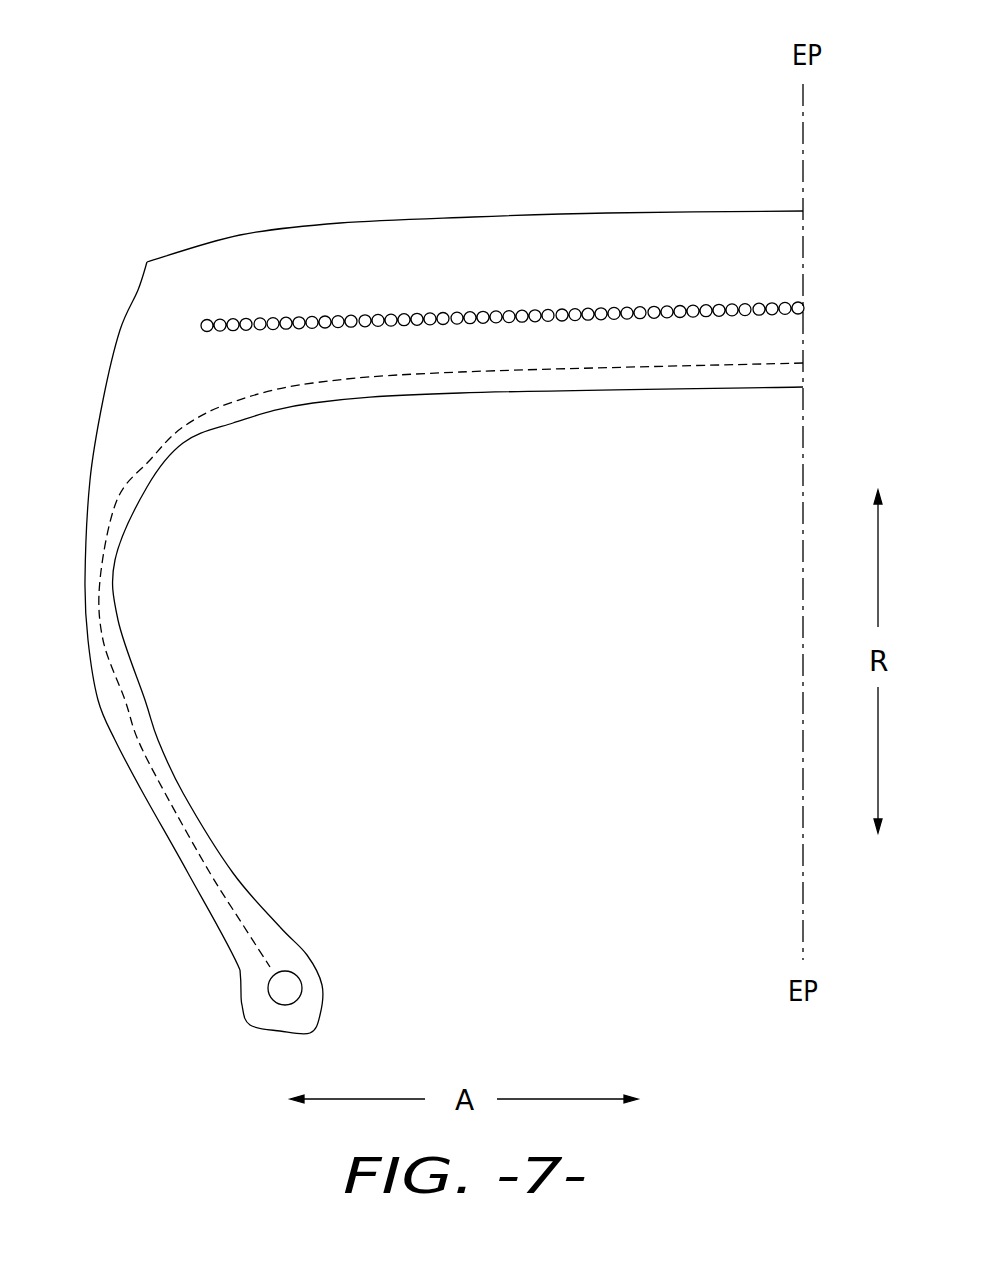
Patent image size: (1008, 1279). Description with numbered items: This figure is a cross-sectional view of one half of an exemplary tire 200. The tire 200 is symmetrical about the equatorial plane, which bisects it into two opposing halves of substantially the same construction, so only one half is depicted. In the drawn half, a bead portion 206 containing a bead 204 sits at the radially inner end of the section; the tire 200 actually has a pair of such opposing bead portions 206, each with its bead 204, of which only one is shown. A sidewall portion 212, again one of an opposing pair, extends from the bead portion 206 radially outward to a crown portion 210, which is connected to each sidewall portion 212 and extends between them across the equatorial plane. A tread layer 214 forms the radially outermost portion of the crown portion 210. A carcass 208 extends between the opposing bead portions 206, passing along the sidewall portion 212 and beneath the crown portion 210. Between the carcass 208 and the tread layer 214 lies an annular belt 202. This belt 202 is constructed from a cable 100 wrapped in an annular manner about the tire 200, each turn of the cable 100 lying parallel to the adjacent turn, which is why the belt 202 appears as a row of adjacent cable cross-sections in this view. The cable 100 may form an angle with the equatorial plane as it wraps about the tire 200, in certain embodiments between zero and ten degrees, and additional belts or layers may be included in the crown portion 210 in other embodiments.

The cable 100 is at (205, 326).
The tire 200 is at (237, 100).
The annular belt 202 is at (810, 305).
The bead 204 is at (280, 995).
The bead portion 206 is at (255, 985).
The carcass 208 is at (163, 793).
The crown portion 210 is at (255, 262).
The sidewall portion 212 is at (95, 665).
The tread layer 214 is at (695, 243).